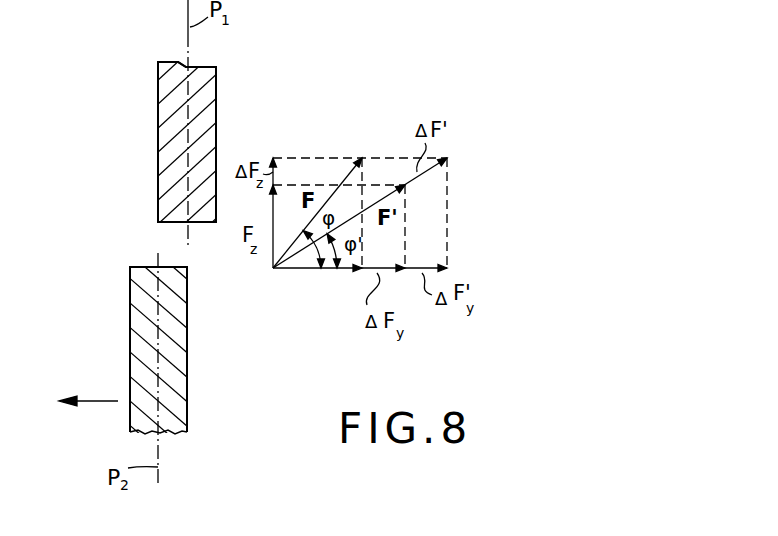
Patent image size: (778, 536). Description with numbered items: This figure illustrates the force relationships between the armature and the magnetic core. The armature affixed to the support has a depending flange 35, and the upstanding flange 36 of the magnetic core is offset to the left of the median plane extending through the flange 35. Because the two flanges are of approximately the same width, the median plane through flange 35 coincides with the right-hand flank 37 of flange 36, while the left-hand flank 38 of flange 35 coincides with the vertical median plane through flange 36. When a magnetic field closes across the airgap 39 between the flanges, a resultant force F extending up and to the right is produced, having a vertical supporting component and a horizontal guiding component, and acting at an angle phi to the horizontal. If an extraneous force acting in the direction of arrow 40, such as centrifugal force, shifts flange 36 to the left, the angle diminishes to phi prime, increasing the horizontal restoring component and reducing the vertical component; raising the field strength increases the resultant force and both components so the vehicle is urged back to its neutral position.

The depending flange 35 is at (140, 149).
The upstanding flange of magnetic core 36 is at (113, 326).
The right-hand flank 37 is at (185, 362).
The left-hand flank 38 is at (158, 95).
The airgap 39 is at (170, 242).
The arrow 40 is at (92, 401).